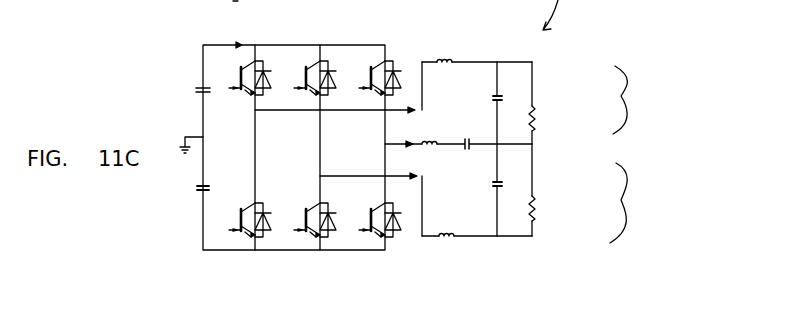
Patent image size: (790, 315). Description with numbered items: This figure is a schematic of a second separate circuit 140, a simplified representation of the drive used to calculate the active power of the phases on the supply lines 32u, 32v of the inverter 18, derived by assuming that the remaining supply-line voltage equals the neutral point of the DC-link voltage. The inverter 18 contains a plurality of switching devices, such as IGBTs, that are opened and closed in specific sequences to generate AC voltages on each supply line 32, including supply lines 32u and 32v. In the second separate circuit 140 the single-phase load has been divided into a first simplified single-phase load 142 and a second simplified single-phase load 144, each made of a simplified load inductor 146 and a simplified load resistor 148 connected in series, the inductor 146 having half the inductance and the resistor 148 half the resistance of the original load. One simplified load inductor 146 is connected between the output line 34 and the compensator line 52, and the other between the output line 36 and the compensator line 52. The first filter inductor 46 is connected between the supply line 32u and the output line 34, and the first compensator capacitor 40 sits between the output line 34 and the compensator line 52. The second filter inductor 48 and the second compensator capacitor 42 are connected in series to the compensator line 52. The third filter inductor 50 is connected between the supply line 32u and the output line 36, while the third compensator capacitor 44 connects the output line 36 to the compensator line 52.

The inverter 18 is at (398, 248).
The supply line 32 is at (380, 118).
The supply line 32u is at (421, 68).
The supply line 32v is at (396, 179).
The output line 34 is at (533, 62).
The output line 36 is at (507, 239).
The first compensator capacitor 40 is at (496, 95).
The second compensator capacitor 42 is at (467, 146).
The third compensator capacitor 44 is at (493, 189).
The first filter inductor 46 is at (440, 60).
The second filter inductor 48 is at (432, 136).
The third filter inductor 50 is at (446, 240).
The compensator line 52 is at (495, 137).
The second separate circuit 140 is at (672, 34).
The first simplified single-phase load 142 is at (623, 96).
The second simplified single-phase load 144 is at (623, 200).
The simplified load inductor 146 is at (575, 171).
The simplified load resistor 148 is at (563, 222).